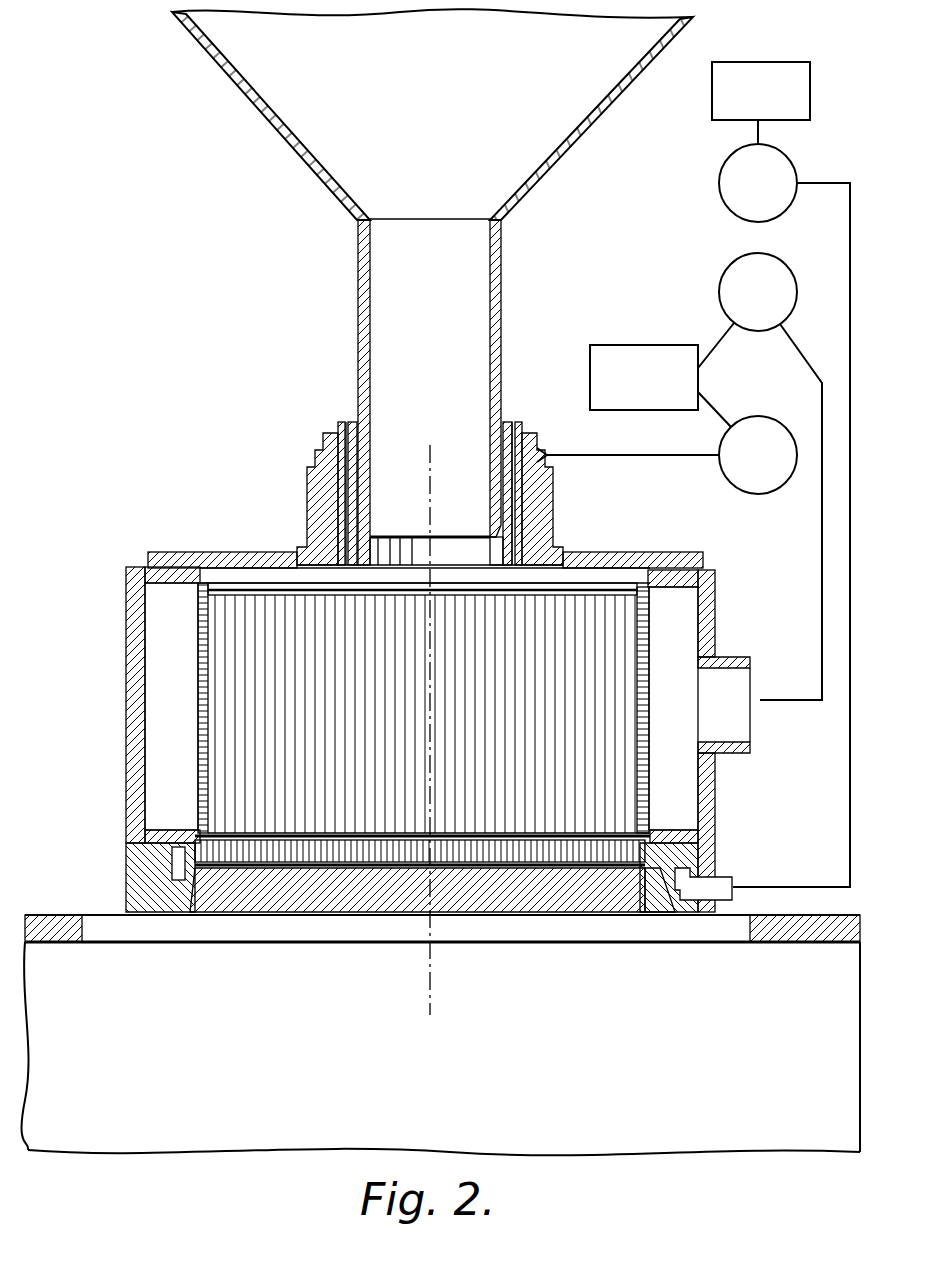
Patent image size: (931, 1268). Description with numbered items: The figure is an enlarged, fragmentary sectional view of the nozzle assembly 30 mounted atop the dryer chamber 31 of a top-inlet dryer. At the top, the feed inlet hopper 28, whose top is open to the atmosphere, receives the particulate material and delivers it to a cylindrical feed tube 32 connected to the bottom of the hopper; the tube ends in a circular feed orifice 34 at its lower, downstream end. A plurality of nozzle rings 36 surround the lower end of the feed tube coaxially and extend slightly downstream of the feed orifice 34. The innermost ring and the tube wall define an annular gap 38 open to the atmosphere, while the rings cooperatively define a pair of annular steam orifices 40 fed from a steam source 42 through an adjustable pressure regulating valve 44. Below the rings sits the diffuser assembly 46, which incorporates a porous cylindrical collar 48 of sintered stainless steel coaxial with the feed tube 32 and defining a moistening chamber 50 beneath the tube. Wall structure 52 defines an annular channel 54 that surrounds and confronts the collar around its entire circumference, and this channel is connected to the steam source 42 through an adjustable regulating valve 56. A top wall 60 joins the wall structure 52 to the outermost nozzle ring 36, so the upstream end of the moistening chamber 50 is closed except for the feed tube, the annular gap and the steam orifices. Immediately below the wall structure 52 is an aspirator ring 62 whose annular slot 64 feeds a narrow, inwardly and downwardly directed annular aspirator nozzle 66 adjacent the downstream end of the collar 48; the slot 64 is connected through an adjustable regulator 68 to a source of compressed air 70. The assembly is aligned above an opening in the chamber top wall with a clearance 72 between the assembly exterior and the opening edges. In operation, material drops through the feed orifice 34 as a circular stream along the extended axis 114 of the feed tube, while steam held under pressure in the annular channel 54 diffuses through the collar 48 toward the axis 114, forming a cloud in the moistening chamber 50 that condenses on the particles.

The feed inlet hopper 28 is at (288, 150).
The nozzle assembly 30 is at (168, 492).
The dryer chamber 31 is at (33, 1040).
The cylindrical feed tube 32 is at (352, 313).
The circular feed orifice 34 is at (398, 568).
The nozzle rings 36 is at (553, 493).
The annular gap 38 is at (504, 542).
The annular steam orifices 40 is at (530, 548).
The steam source 42 is at (590, 346).
The adjustable pressure regulating valve 44 is at (732, 483).
The diffuser assembly 46 is at (420, 739).
The porous cylindrical collar 48 is at (640, 763).
The moistening chamber 50 is at (374, 822).
The wall structure 52 is at (135, 636).
The annular channel 54 is at (162, 684).
The adjustable regulating valve 56 is at (719, 283).
The top wall 60 is at (230, 551).
The aspirator ring 62 is at (655, 913).
The annular slot 64 is at (684, 905).
The annular aspirator nozzle 66 is at (638, 872).
The adjustable regulator 68 is at (719, 196).
The source of compressed air 70 is at (711, 118).
The clearance 72 is at (110, 908).
The extended axis 114 is at (430, 748).